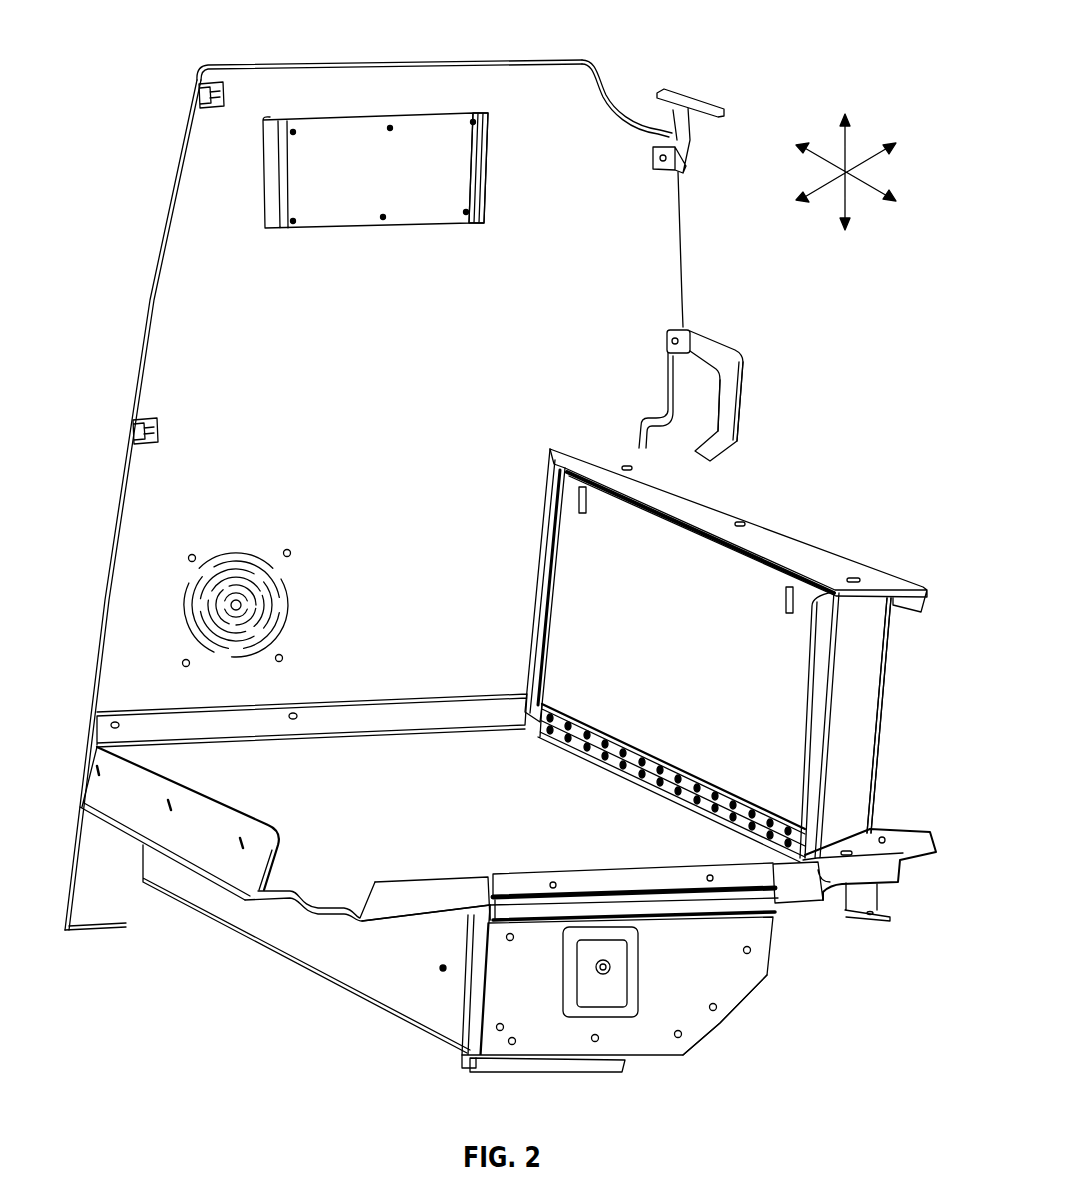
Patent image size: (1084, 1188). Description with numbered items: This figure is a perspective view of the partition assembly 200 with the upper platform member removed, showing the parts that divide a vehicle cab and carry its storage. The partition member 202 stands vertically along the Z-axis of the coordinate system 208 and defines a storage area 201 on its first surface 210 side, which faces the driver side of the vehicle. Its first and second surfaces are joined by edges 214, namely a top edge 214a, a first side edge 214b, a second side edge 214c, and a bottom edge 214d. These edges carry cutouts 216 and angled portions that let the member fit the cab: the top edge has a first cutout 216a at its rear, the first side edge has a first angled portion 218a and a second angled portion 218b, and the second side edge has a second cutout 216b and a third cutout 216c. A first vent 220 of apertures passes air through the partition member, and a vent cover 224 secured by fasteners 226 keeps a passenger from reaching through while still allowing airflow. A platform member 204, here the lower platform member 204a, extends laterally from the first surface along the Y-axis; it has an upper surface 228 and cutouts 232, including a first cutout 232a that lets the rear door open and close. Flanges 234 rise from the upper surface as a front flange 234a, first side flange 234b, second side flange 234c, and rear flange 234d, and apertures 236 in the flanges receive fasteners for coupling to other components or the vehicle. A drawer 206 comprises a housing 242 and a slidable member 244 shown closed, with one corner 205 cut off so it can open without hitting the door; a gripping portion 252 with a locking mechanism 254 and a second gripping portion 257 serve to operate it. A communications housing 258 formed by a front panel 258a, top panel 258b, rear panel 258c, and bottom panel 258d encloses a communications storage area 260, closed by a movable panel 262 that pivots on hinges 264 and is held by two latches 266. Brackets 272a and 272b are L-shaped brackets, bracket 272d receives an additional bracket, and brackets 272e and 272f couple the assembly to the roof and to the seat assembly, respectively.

The partition assembly 200 is at (794, 34).
The storage area 201 is at (130, 361).
The partition member 202 is at (412, 483).
The platform member 204 is at (250, 635).
The lower platform member 204a is at (267, 768).
The corner 205 is at (712, 1034).
The drawer 206 is at (743, 1103).
The coordinate system 208 is at (850, 143).
The first surface 210 is at (188, 194).
The edges 214 is at (122, 505).
The top edge 214a is at (275, 66).
The first side edge 214b is at (148, 292).
The second side edge 214c is at (688, 263).
The bottom edge 214d is at (120, 932).
The cutouts 216 is at (618, 80).
The first cutout 216a is at (616, 56).
The second cutout 216b is at (672, 372).
The third cutout 216c is at (640, 422).
The first angled portion 218a is at (118, 472).
The second angled portion 218b is at (184, 136).
The first vent 220 is at (279, 573).
The vent cover 224 is at (364, 100).
The fasteners 226 is at (484, 118).
The upper surface 228 is at (313, 880).
The cutouts 232 is at (519, 860).
The first cutout 232a is at (290, 912).
The flanges 234 is at (275, 900).
The front flange 234a is at (238, 880).
The first side flange 234b is at (394, 712).
The second side flange 234c is at (414, 894).
The rear flange 234d is at (876, 814).
The apertures 236 is at (294, 712).
The housing 242 is at (412, 1006).
The slidable member 244 is at (713, 960).
The gripping portion 252 is at (614, 985).
The locking mechanism 254 is at (592, 972).
The second gripping portion 257 is at (770, 915).
The communications housing 258 is at (788, 510).
The front panel 258a is at (740, 830).
The top panel 258b is at (853, 577).
The rear panel 258c is at (866, 656).
The bottom panel 258d is at (868, 911).
The communications storage area 260 is at (856, 698).
The movable panel 262 is at (565, 627).
The hinges 264 is at (606, 763).
The latches 266 is at (583, 516).
The bracket 272a is at (203, 86).
The bracket 272b is at (151, 426).
The bracket 272d is at (470, 1068).
The bracket 272e is at (696, 101).
The bracket 272f is at (735, 402).